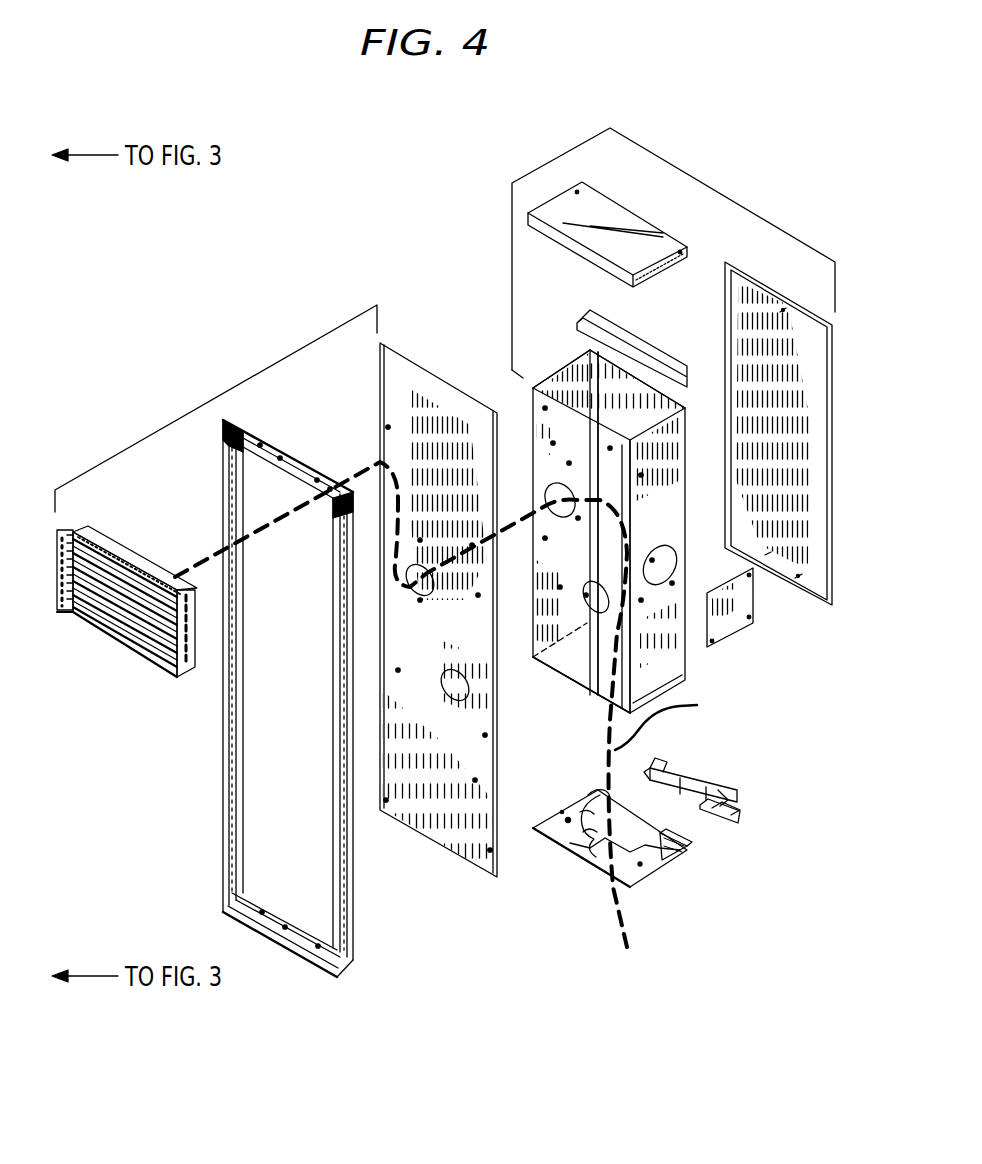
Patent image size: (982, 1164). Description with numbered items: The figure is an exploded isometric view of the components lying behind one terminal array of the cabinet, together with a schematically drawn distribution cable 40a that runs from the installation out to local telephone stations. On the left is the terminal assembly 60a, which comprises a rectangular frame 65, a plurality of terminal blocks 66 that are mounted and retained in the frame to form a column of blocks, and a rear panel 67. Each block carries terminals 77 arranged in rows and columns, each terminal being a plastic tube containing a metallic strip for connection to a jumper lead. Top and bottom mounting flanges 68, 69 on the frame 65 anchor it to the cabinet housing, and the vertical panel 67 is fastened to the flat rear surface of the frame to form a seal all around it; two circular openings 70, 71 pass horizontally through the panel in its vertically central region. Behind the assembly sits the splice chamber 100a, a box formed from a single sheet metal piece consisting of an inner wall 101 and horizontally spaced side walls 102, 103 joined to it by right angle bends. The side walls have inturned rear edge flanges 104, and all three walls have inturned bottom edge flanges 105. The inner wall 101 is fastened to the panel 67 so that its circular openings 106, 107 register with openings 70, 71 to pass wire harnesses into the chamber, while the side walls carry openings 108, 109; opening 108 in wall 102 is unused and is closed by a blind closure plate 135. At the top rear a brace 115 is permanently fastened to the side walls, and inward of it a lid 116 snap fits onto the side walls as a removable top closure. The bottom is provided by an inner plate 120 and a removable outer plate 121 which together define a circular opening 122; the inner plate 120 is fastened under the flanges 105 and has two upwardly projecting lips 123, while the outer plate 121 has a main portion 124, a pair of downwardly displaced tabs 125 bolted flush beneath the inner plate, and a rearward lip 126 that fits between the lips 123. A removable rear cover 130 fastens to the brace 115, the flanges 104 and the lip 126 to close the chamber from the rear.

The terminal assembly 60a is at (181, 410).
The rectangular frame 65 is at (254, 713).
The terminal blocks 66 is at (126, 581).
The rear panel 67 is at (438, 592).
The top mounting flange 68 is at (300, 468).
The bottom mounting flange 69 is at (304, 957).
The circular opening 70 is at (419, 548).
The circular opening 71 is at (455, 705).
The terminals 77 is at (94, 622).
The splice chamber 100a is at (555, 158).
The inner wall 101 is at (646, 512).
The side wall 102 is at (688, 666).
The side wall 103 is at (557, 372).
The inturned edge flanges 104 is at (685, 408).
The inturned edge flanges 105 is at (613, 690).
The circular opening 106 is at (562, 482).
The circular opening 107 is at (620, 628).
The opening 108 is at (650, 548).
The opening 109 is at (569, 528).
The brace 115 is at (635, 330).
The lid 116 is at (620, 209).
The inner plate 120 is at (638, 823).
The outer plate 121 is at (742, 799).
The circular opening 122 is at (598, 820).
The lips 123 is at (598, 783).
The main portion 124 is at (743, 802).
The tabs 125 is at (648, 767).
The rearward lip 126 is at (726, 770).
The rear cover 130 is at (830, 426).
The blind closure plate 135 is at (734, 630).
The distribution cable 40a is at (679, 720).